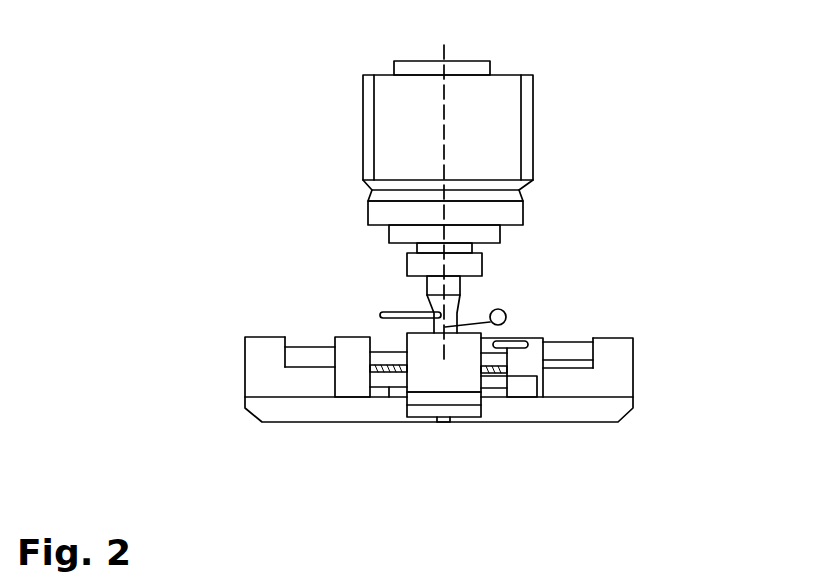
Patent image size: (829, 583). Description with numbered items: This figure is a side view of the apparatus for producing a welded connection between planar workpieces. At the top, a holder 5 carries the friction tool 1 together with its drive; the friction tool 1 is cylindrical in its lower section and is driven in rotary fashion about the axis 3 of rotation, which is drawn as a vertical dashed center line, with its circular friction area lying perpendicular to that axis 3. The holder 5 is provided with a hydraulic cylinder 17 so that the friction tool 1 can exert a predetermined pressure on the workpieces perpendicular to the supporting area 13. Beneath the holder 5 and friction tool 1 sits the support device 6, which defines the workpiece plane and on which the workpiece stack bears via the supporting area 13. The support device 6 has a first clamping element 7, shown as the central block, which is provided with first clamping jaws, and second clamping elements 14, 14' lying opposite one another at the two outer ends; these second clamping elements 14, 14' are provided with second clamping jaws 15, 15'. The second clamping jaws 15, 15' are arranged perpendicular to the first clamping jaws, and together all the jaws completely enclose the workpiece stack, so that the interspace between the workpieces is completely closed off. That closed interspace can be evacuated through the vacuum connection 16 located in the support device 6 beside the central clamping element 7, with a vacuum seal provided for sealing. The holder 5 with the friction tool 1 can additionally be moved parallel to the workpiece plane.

The friction tool 1 is at (504, 311).
The axis of rotation 3 is at (445, 142).
The holder 5 is at (492, 151).
The support device 6 is at (617, 433).
The first clamping element 7 is at (435, 368).
The supporting area 13 is at (383, 357).
The second clamping element 14 is at (638, 328).
The second clamping element 14' is at (236, 331).
The second clamping jaw 15 is at (607, 393).
The second clamping jaw 15' is at (254, 386).
The vacuum connection 16 is at (508, 343).
The hydraulic cylinder 17 is at (472, 67).